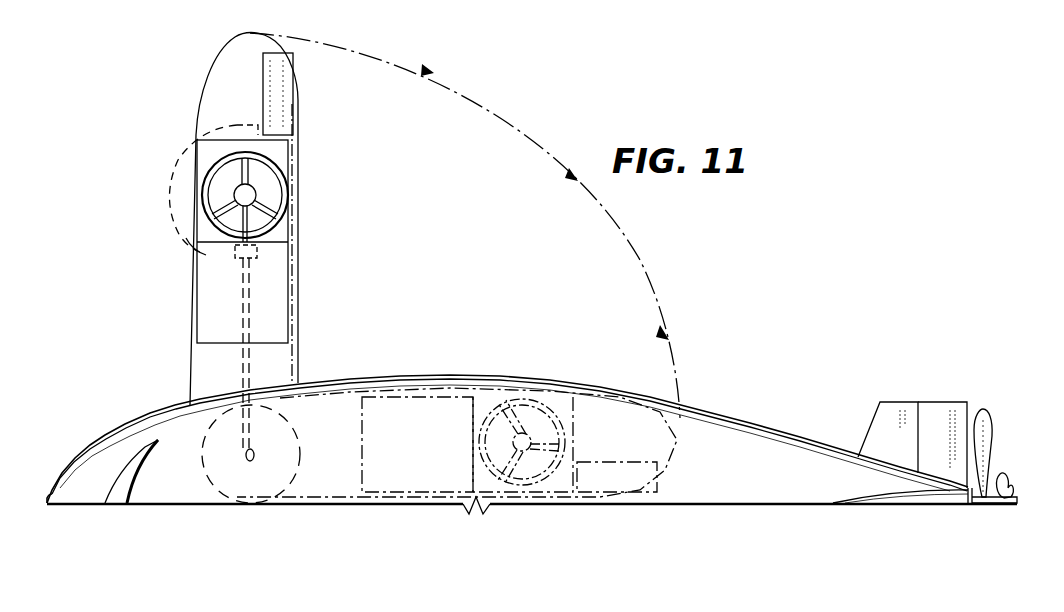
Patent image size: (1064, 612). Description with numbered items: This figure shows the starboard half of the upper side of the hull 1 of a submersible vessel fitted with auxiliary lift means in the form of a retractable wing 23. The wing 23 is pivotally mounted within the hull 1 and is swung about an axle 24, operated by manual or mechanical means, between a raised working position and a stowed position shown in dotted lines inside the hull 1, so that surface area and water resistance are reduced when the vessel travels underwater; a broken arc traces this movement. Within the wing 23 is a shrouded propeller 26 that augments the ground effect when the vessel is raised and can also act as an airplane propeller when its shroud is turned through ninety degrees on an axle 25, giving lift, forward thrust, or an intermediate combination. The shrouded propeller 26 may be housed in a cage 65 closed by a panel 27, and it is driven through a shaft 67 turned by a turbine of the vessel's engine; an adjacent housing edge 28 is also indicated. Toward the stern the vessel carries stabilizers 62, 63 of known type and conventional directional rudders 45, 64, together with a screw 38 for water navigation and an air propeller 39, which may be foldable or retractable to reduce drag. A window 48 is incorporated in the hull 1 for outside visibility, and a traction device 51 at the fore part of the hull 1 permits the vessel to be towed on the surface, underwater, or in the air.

The hull 1 is at (722, 424).
The retractable wing 23 is at (213, 371).
The axle 24 is at (268, 503).
The axle 25 is at (194, 189).
The shrouded propeller 26 is at (252, 172).
The panel 27 is at (277, 292).
The housing edge 28 is at (192, 248).
The screw 38 is at (1010, 479).
The air propeller 39 is at (988, 444).
The directional rudder 45 is at (892, 501).
The window 48 is at (127, 464).
The traction device 51 is at (48, 502).
The stabilizer 62 is at (900, 515).
The stabilizer 63 is at (885, 422).
The directional rudder 64 is at (938, 416).
The cage 65 is at (280, 239).
The shaft 67 is at (251, 218).